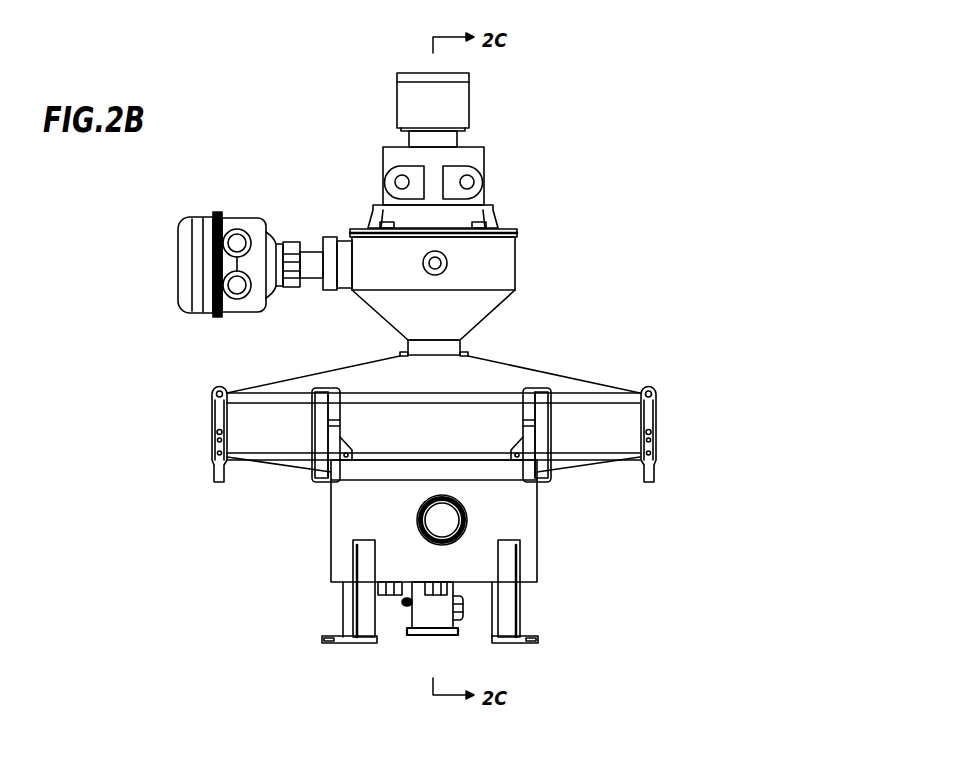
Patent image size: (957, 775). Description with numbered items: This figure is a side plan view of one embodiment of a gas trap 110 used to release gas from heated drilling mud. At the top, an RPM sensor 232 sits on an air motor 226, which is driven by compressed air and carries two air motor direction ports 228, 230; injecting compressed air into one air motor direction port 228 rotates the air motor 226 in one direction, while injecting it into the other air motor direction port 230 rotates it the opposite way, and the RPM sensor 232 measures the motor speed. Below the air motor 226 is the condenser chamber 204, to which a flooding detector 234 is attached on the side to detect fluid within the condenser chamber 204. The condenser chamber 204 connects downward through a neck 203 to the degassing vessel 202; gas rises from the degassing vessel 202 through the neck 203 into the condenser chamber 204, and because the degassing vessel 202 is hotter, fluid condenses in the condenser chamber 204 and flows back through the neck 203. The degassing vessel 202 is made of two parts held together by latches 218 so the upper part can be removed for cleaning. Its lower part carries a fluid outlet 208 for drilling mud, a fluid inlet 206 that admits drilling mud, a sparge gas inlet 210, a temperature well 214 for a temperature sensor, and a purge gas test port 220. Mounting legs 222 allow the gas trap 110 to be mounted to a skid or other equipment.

The gas trap 110 is at (700, 134).
The degassing vessel 202 is at (570, 392).
The neck 203 is at (462, 345).
The condenser chamber 204 is at (517, 253).
The fluid inlet 206 is at (420, 622).
The fluid outlet 208 is at (468, 512).
The sparge gas inlet 210 is at (390, 655).
The temperature well 214 is at (378, 594).
The latches 218 is at (657, 422).
The purge gas test port 220 is at (467, 607).
The mounting legs 222 is at (520, 607).
The air motor 226 is at (486, 158).
The air motor direction port 228 is at (480, 185).
The air motor direction port 230 is at (383, 187).
The RPM sensor 232 is at (472, 95).
The flooding detector 234 is at (177, 288).